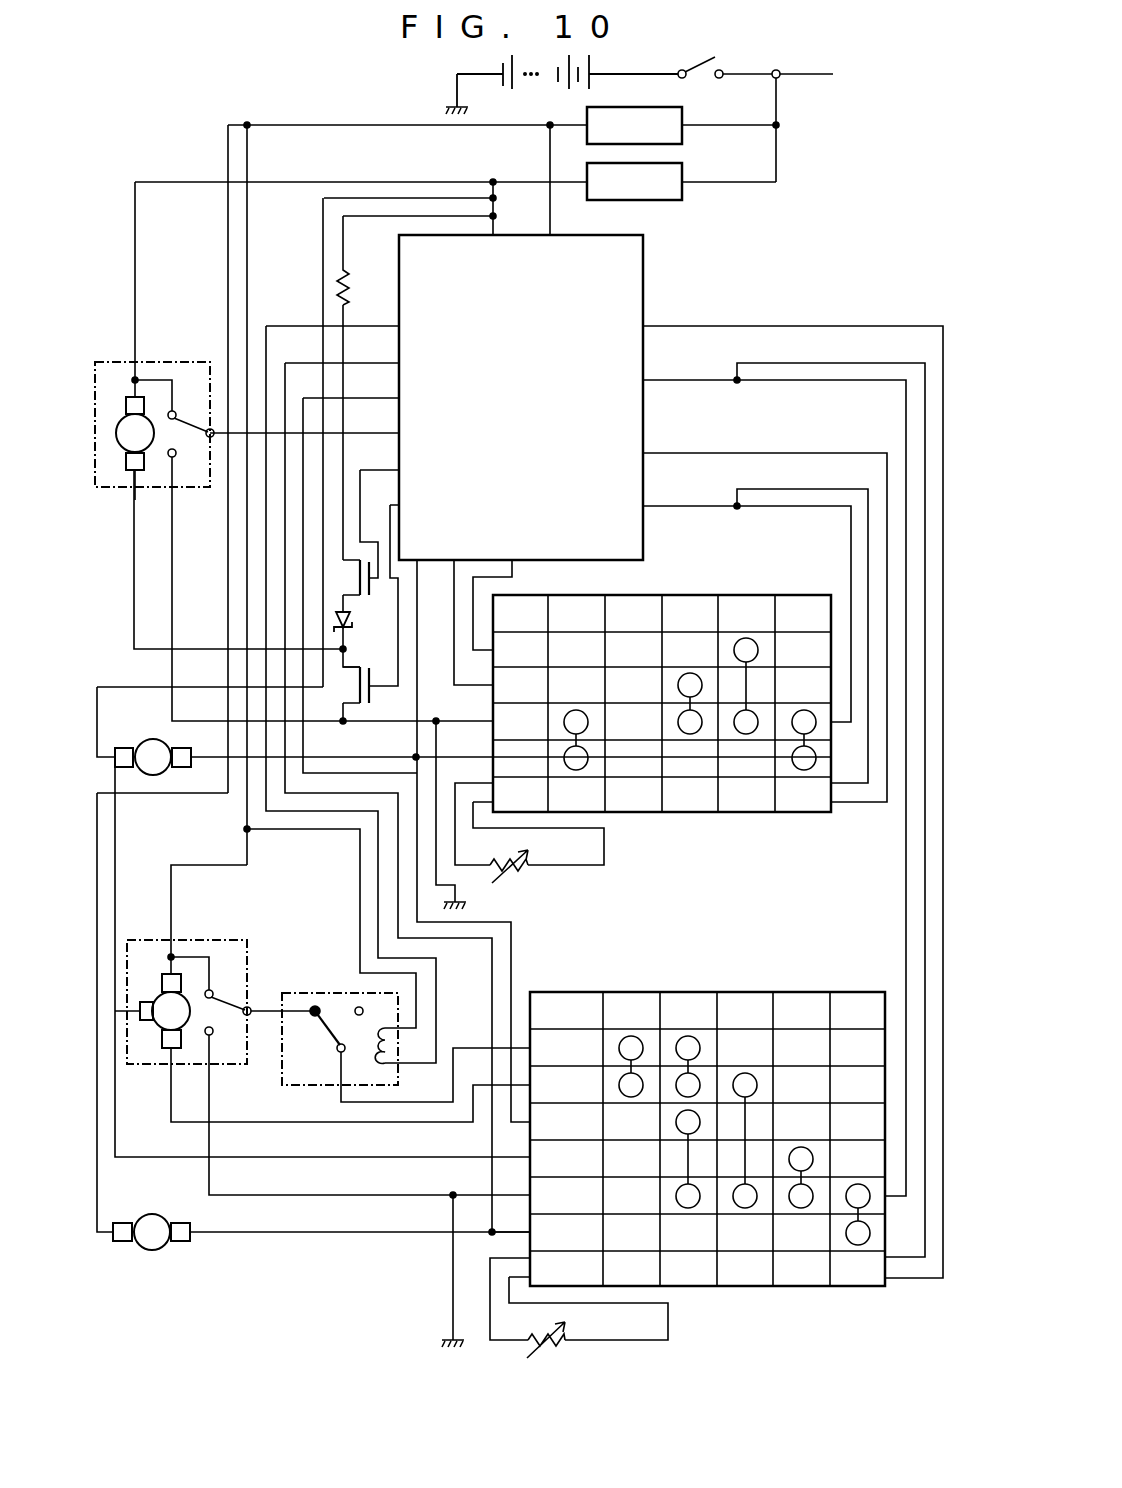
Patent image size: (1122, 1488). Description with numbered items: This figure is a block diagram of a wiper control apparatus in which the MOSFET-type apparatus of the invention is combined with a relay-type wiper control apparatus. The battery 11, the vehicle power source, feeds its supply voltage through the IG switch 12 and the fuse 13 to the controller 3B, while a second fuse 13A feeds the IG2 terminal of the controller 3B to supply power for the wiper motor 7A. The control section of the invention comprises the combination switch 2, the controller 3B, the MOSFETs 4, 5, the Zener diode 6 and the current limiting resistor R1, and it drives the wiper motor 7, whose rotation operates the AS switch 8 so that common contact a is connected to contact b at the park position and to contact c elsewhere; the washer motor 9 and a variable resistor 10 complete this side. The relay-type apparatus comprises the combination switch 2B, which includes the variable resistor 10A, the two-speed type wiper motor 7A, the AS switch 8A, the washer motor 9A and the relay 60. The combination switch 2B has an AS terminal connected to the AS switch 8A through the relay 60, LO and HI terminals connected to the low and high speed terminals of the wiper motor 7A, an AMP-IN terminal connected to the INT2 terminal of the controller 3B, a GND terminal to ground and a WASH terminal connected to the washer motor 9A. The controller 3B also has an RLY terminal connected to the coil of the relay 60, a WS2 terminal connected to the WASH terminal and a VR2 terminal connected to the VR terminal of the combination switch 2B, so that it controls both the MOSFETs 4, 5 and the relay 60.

The combination switch 2 is at (757, 595).
The combination switch 2B is at (813, 992).
The controller 3B is at (589, 234).
The MOSFET 4 is at (371, 693).
The MOSFET 5 is at (366, 581).
The Zener diode 6 is at (357, 622).
The wiper motor 7 is at (117, 426).
The two-speed type wiper motor 7A is at (163, 1000).
The AS switch 8 is at (188, 418).
The AS switch 8A is at (222, 997).
The washer motor 9 is at (148, 741).
The washer motor 9A is at (157, 1213).
The variable resistor 10 is at (514, 874).
The variable resistor 10A is at (572, 1330).
The battery 11 is at (576, 91).
The IG switch 12 is at (717, 82).
The fuse 13 is at (664, 201).
The fuse 13A is at (627, 107).
The relay 60 is at (340, 992).
The current limiting resistor R1 is at (328, 287).